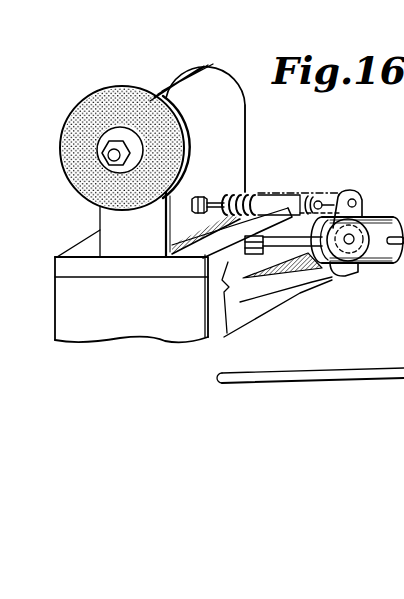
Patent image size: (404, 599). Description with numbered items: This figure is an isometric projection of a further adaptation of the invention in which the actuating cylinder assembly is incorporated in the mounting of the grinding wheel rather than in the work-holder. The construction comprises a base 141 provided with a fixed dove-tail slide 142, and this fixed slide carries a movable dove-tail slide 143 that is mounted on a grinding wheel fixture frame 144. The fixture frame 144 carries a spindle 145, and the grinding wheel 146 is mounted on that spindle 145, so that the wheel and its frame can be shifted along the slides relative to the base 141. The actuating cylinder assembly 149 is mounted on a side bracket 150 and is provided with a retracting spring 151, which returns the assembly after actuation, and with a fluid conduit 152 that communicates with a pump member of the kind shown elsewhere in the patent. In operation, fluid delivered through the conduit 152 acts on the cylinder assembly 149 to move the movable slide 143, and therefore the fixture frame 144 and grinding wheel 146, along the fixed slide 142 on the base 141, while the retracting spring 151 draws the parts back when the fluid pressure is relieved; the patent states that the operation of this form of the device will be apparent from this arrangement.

The base 141 is at (173, 275).
The fixed dove-tail slide 142 is at (227, 333).
The movable dove-tail slide 143 is at (113, 226).
The grinding wheel fixture frame 144 is at (222, 153).
The spindle 145 is at (103, 156).
The grinding wheel 146 is at (108, 93).
The actuating cylinder assembly 149 is at (372, 259).
The side bracket 150 is at (312, 283).
The retracting spring 151 is at (312, 197).
The fluid conduit 152 is at (403, 348).